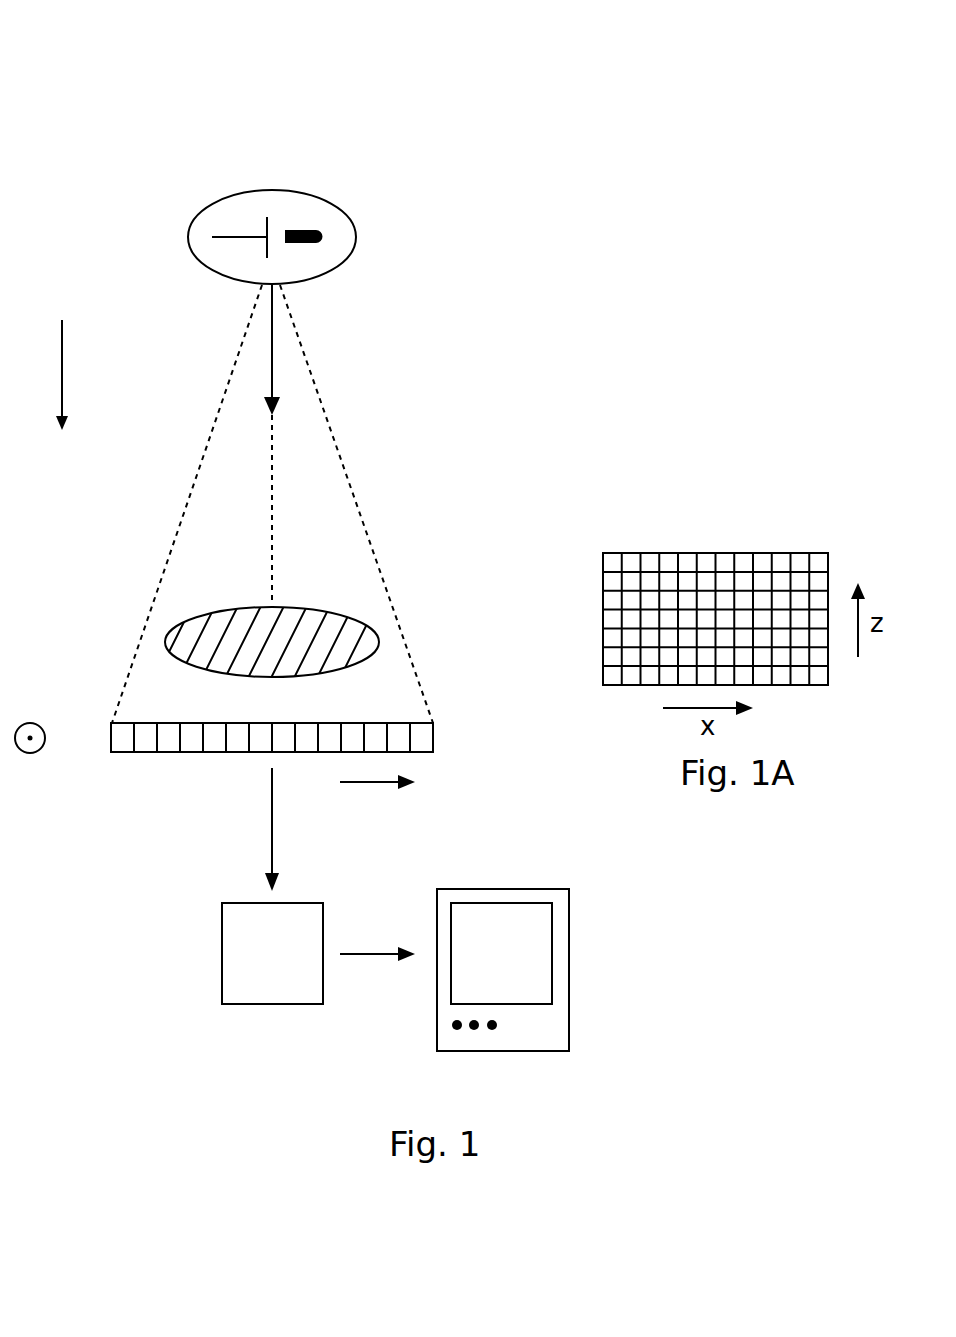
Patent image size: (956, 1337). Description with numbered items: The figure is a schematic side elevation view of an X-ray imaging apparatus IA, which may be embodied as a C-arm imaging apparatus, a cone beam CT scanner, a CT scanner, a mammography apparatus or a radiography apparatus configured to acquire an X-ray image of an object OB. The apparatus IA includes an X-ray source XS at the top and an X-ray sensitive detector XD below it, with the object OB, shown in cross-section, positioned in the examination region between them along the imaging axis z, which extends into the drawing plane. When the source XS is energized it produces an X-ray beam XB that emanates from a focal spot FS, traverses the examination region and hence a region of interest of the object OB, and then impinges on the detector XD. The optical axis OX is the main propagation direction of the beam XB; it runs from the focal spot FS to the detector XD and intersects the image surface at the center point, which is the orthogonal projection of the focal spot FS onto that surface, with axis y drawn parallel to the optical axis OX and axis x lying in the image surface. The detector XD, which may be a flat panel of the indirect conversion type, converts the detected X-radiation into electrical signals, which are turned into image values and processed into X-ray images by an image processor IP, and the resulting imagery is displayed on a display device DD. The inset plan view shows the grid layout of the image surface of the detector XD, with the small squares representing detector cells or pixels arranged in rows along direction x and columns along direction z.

The X-ray imaging apparatus IA is at (177, 168).
The X-ray source XS is at (347, 210).
The focal spot FS is at (265, 248).
The optical axis OX is at (280, 343).
The X-ray beam XB is at (308, 422).
The object OB is at (342, 622).
The X-ray detector XD is at (433, 725).
The image processor IP is at (241, 956).
The display device DD is at (573, 977).